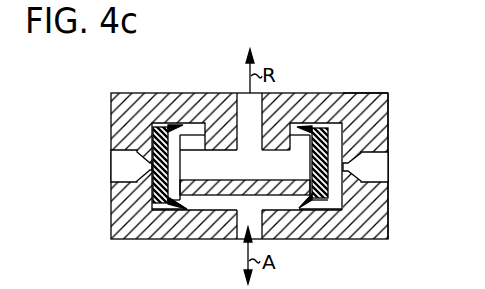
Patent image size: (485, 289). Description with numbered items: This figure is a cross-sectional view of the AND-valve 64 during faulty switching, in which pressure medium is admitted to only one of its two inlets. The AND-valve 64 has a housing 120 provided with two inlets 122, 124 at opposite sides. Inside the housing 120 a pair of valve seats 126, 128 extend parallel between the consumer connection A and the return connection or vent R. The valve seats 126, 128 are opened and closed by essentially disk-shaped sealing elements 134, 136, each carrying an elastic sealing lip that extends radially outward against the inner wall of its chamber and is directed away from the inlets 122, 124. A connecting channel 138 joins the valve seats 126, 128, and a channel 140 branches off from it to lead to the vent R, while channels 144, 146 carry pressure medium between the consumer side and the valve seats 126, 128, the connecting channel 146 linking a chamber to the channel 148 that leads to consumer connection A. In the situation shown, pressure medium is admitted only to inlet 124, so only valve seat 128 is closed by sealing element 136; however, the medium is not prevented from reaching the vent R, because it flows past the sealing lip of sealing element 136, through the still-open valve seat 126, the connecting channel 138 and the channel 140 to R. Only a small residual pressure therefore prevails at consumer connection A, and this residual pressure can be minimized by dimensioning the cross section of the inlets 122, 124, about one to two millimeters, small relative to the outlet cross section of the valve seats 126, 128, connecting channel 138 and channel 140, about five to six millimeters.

The AND-valve 64 is at (375, 90).
The housing 120 is at (373, 113).
The inlet 122 is at (118, 172).
The inlet 124 is at (373, 170).
The valve seat 126 is at (181, 150).
The valve seat 128 is at (330, 126).
The sealing element 134 is at (156, 142).
The sealing element 136 is at (337, 142).
The connecting channel 138 is at (193, 165).
The channel 140 is at (243, 123).
The channel 144 is at (192, 208).
The connecting channel 146 is at (290, 204).
The channel 148 is at (239, 231).